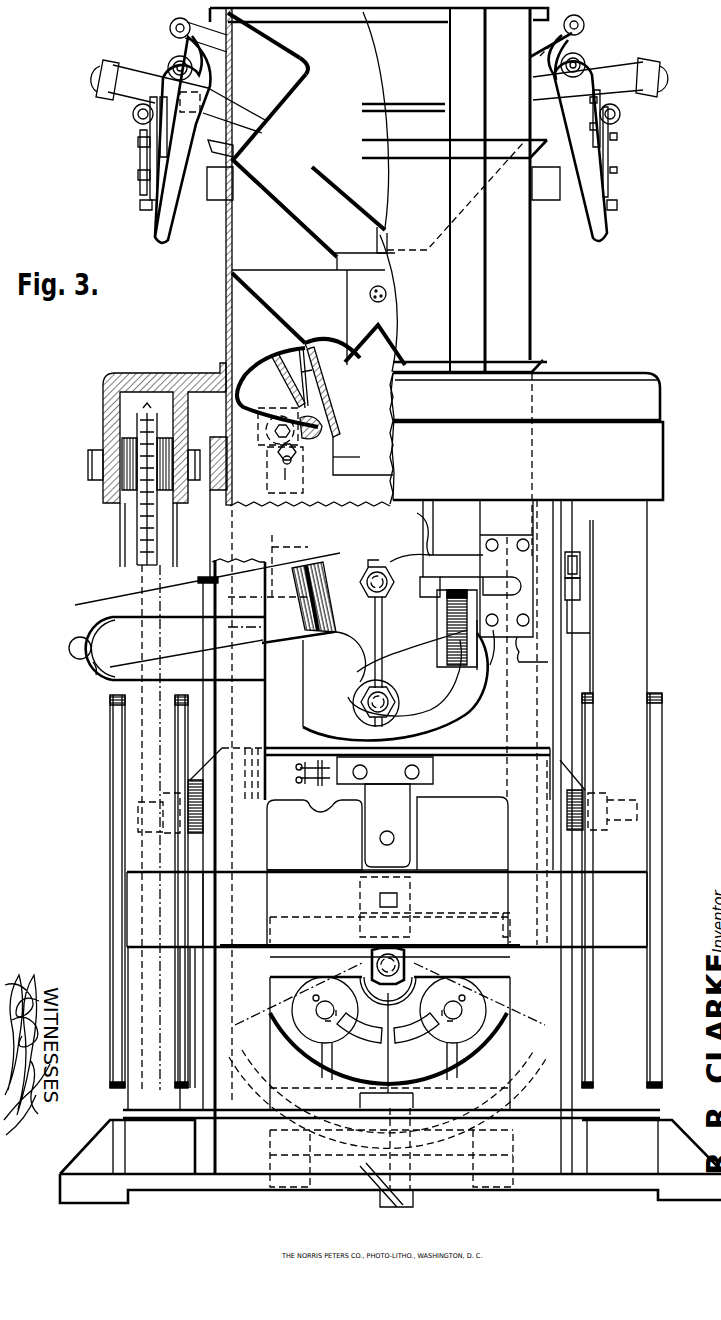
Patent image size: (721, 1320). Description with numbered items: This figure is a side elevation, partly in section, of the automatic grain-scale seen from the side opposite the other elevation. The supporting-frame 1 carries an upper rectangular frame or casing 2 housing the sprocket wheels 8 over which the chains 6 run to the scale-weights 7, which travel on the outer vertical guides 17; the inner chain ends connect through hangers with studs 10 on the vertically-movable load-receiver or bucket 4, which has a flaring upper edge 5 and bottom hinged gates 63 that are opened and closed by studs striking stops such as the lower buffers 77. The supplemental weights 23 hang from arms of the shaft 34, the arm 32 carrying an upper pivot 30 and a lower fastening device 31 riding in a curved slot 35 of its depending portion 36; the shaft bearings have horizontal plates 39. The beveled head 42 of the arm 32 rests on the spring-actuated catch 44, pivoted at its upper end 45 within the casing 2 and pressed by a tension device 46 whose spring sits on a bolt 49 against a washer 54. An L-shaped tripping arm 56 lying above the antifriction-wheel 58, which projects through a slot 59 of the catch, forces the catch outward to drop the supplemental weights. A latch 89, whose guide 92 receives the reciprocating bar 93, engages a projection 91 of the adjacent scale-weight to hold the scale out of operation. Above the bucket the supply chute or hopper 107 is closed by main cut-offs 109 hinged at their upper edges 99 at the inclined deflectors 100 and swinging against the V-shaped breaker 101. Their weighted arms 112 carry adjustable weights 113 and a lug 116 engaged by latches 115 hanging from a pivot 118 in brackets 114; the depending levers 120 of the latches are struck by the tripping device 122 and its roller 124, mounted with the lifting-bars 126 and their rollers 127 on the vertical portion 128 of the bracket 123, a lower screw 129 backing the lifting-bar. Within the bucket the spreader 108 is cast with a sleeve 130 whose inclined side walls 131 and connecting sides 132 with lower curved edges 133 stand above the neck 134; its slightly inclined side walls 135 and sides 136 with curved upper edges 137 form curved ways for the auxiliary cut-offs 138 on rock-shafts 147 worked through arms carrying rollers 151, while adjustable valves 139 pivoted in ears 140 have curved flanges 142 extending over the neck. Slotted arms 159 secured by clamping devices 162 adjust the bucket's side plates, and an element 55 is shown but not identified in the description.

The supporting-frame 1 is at (118, 557).
The rectangular frame or casing 2 is at (163, 380).
The load-receiver or bucket 4 is at (225, 329).
The flaring upper edge 5 is at (213, 149).
The chains 6 is at (136, 532).
The scale-weights 7 is at (112, 720).
The chain or sprocket wheels 8 is at (147, 425).
The projections or studs 10 is at (192, 822).
The outer vertical guides 17 is at (128, 760).
The supplemental weights 23 is at (310, 700).
The upper pivot 30 is at (377, 565).
The lower fastening device 31 is at (362, 694).
The arm 32 is at (323, 566).
The shaft 34 is at (78, 636).
The curved slots 35 is at (447, 690).
The depending portions 36 is at (362, 656).
The plates or arms 39 is at (96, 672).
The beveled tooth or head 42 is at (418, 528).
The spring-actuated catch 44 is at (445, 562).
The upper end of the catch 45 is at (316, 1040).
The tension device 46 is at (280, 977).
The bolt or screw 49 is at (345, 1045).
The washer 54 is at (516, 650).
The cross bar 55 is at (290, 756).
The tripping arm 56 is at (430, 598).
The antifriction-wheel 58 is at (455, 622).
The slot of the catch 59 is at (478, 663).
The hinged gates 63 is at (272, 1112).
The lower buffers or stops 77 is at (268, 1146).
The latch 89 is at (572, 634).
The projection 91 is at (575, 768).
The guide 92 is at (582, 590).
The reciprocating bar 93 is at (582, 568).
The upper edges of the main cut-offs 99 is at (307, 64).
The inclined deflectors 100 is at (270, 30).
The V-shaped breaker 101 is at (344, 196).
The supply chute or hopper 107 is at (362, 192).
The spreader 108 is at (372, 362).
The main cut-offs 109 is at (266, 134).
The weighted arms 112 is at (90, 78).
The adjustable weights 113 is at (88, 58).
The brackets or supports 114 is at (224, 44).
The latches 115 is at (208, 88).
The lug or projection 116 is at (207, 110).
The pivot 118 is at (170, 32).
The depending arm or lever 120 is at (160, 242).
The tripping device 122 is at (140, 190).
The bracket 123 is at (203, 196).
The roller or antifriction-wheel 124 is at (168, 66).
The lifting-bars 126 is at (150, 162).
The rollers 127 is at (133, 120).
The vertical portion of the bracket 128 is at (160, 172).
The lower screw 129 is at (141, 208).
The sleeve or frame 130 is at (369, 294).
The inclined side walls 131 is at (288, 312).
The sides of the sleeve 132 is at (303, 270).
The lower curved edges 133 is at (336, 338).
The neck 134 is at (340, 447).
The inclined side walls of the neck 135 is at (322, 422).
The sides of the neck 136 is at (311, 439).
The curved upper edges 137 is at (318, 378).
The auxiliary cut-offs 138 is at (262, 356).
The adjustable cut-offs or valves 139 is at (282, 376).
The ears 140 is at (318, 393).
The curved tops or flanges 142 is at (304, 336).
The rock-shafts or pintles 147 is at (334, 466).
The antifriction wheels or rollers 151 is at (266, 432).
The slotted arms 159 is at (322, 815).
The clamping devices 162 is at (302, 778).